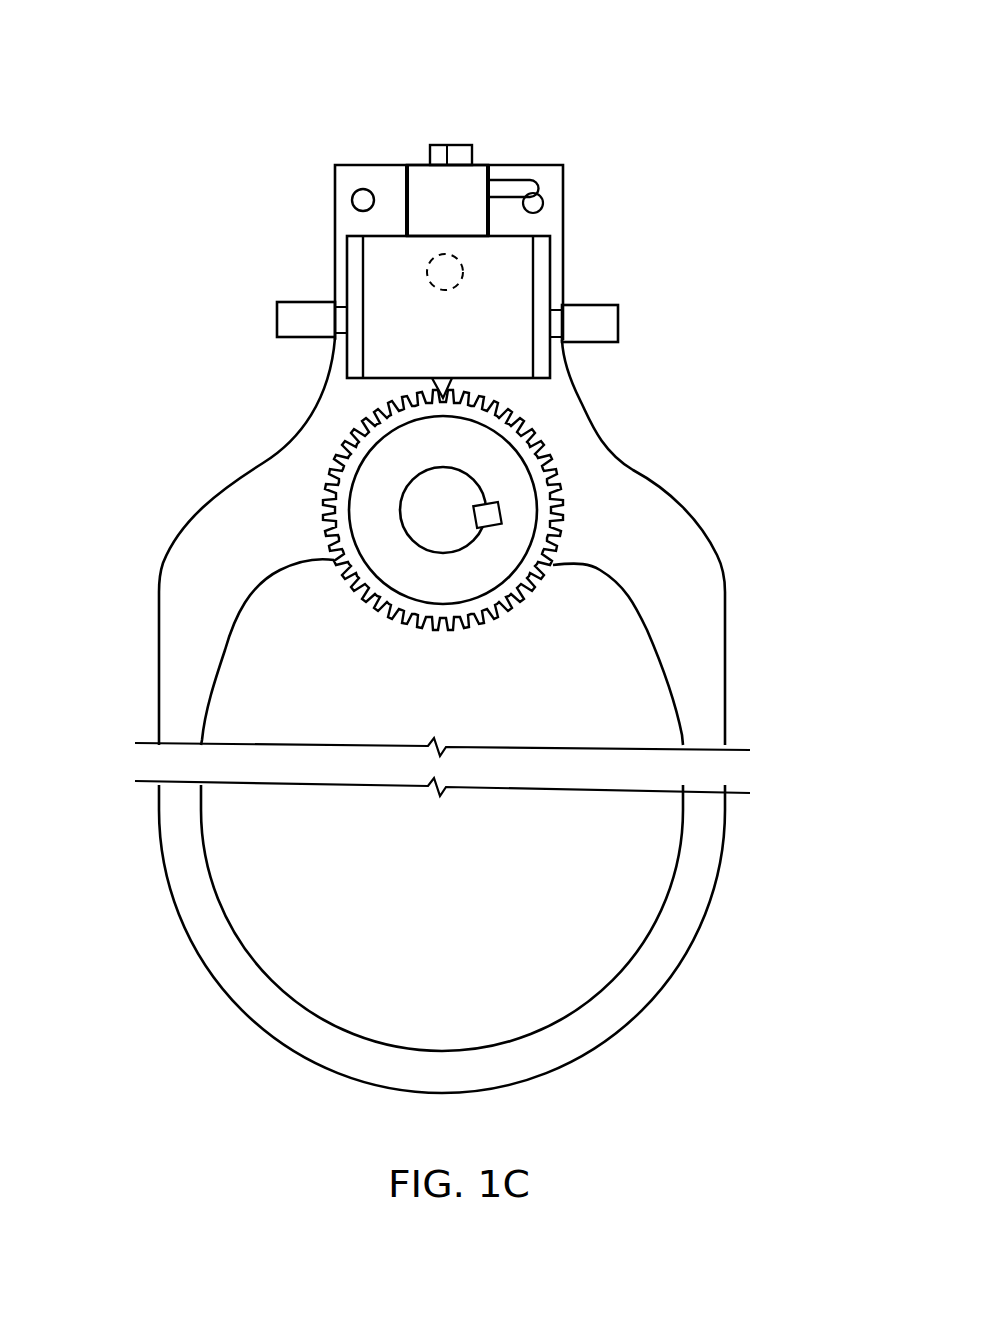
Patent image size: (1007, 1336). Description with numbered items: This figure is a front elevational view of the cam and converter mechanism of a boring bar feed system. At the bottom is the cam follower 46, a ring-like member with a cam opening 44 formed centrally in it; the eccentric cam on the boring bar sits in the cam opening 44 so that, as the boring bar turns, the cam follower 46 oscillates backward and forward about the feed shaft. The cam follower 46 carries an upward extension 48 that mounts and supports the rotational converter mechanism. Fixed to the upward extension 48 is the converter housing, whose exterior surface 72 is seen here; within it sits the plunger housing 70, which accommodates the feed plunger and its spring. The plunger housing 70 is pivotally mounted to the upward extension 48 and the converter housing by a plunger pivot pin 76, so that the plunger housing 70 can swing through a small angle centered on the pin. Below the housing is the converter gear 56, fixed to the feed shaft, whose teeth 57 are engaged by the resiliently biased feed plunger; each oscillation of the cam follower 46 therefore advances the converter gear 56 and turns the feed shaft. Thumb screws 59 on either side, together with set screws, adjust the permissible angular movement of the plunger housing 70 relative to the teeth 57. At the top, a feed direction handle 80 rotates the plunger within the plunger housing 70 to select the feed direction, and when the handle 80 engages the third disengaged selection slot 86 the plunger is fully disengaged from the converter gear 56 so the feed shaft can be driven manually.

The cam opening 44 is at (280, 904).
The cam follower 46 is at (708, 873).
The upward extension 48 is at (567, 193).
The converter gear 56 is at (517, 492).
The teeth 57 is at (323, 463).
The thumb screws 59 is at (275, 317).
The plunger housing 70 is at (472, 220).
The exterior surface 72 is at (455, 347).
The plunger pivot pin 76 is at (420, 260).
The feed direction handle 80 is at (518, 178).
The third disengaged selection slot 86 is at (445, 163).